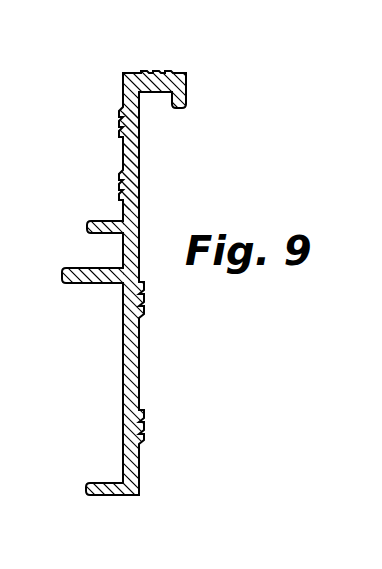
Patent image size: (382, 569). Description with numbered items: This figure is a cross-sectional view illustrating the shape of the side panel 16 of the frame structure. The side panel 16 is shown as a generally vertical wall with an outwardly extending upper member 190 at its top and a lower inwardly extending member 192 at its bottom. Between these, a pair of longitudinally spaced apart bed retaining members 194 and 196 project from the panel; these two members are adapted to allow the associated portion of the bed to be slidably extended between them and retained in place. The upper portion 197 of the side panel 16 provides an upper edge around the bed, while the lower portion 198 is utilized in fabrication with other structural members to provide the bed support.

The side panel 16 is at (191, 284).
The outwardly extending upper member 190 is at (166, 72).
The lower inwardly extending member 192 is at (105, 496).
The bed retaining member 194 is at (82, 284).
The bed retaining member 196 is at (88, 226).
The upper portion 197 is at (123, 153).
The lower portion 198 is at (140, 345).